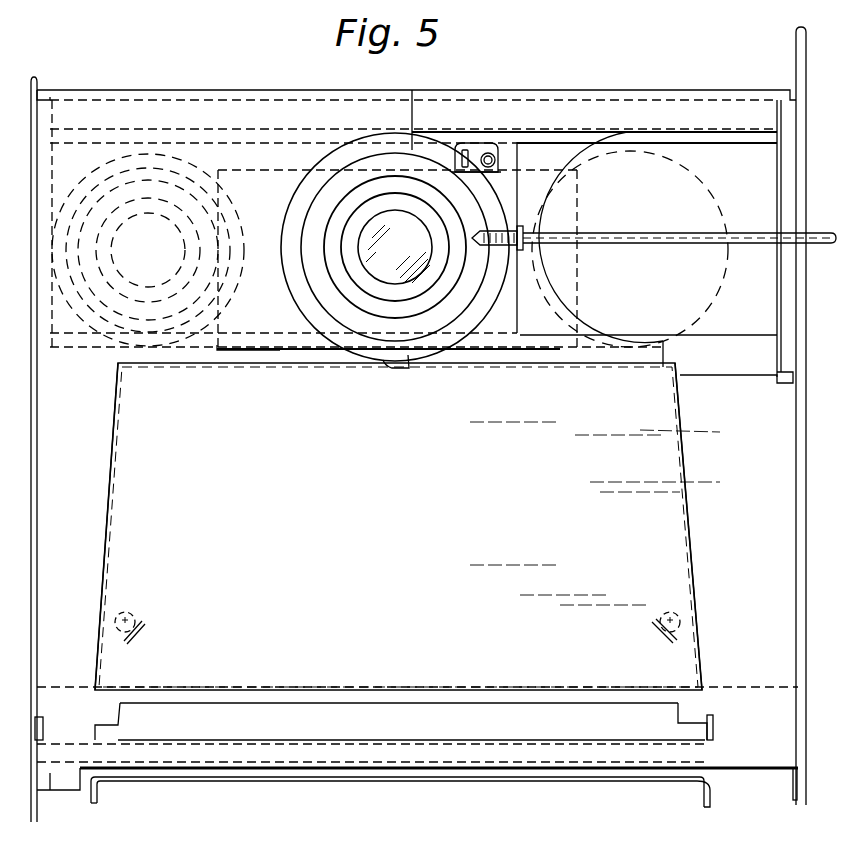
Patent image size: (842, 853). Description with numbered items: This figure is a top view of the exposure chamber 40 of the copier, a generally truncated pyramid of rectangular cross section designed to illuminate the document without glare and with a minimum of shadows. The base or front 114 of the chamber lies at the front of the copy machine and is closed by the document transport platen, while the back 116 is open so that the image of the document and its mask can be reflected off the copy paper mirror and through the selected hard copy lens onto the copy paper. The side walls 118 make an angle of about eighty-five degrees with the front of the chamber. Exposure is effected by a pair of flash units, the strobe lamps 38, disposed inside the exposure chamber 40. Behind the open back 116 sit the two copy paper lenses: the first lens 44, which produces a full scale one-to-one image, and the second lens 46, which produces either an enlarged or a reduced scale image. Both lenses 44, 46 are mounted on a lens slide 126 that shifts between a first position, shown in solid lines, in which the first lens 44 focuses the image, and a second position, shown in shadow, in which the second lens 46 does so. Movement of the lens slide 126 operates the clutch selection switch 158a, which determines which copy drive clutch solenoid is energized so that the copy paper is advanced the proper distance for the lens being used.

The lens slide 126 is at (243, 188).
The clutch selection switch 158a is at (478, 152).
The first lens 44 is at (292, 320).
The second lens 46 is at (91, 333).
The back of the exposure chamber 116 is at (512, 365).
The exposure chamber 40 is at (407, 526).
The side walls 118 is at (112, 494).
The strobe lamps 38 is at (114, 621).
The front of the exposure chamber 114 is at (383, 750).